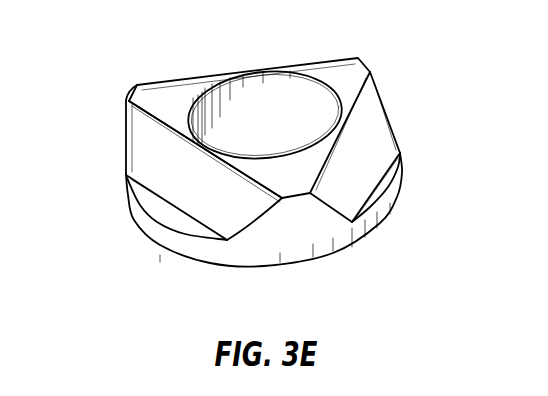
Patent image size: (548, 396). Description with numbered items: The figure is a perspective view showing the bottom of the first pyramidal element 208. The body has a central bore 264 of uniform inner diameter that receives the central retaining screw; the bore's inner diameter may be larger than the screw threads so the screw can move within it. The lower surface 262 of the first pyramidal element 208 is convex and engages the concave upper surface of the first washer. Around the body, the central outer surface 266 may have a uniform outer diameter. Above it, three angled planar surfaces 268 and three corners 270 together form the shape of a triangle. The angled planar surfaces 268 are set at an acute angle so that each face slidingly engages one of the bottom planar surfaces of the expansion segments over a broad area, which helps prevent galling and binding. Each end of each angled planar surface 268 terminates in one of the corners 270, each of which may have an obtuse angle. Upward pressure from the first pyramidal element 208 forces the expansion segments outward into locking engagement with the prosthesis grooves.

The first pyramidal element 208 is at (150, 54).
The lower surface 262 is at (207, 262).
The central bore 264 is at (318, 102).
The central outer surface 266 is at (140, 208).
The angled planar surfaces 268 is at (137, 148).
The corners 270 is at (308, 235).